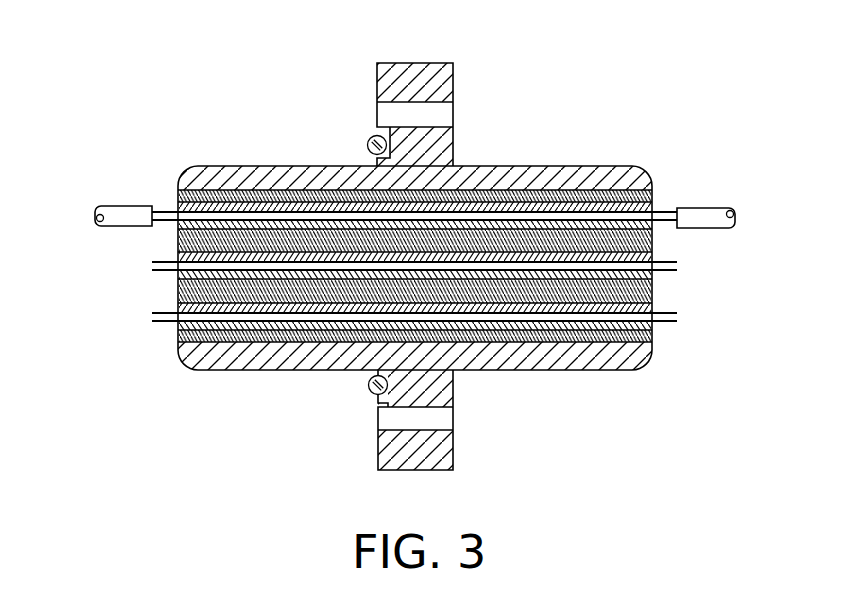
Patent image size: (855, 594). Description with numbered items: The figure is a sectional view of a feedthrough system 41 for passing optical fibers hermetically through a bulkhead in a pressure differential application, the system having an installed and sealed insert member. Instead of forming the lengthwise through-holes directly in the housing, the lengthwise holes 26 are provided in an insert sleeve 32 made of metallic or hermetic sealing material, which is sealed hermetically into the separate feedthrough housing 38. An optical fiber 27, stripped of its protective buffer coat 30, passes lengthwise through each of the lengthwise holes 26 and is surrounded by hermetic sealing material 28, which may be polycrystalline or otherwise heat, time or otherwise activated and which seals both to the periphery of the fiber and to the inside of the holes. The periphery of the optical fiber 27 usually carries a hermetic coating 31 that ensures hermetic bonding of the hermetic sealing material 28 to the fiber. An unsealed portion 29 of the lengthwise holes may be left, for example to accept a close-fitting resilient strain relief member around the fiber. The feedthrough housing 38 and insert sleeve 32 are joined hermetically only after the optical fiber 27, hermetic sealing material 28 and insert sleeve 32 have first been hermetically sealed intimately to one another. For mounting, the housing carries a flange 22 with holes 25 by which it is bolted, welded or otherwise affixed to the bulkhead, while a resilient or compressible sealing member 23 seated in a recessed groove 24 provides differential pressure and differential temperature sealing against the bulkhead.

The flange 22 is at (453, 461).
The sealing member 23 is at (368, 388).
The recessed groove 24 is at (370, 139).
The holes 25 is at (453, 93).
The lengthwise holes 26 is at (613, 172).
The optical fiber 27 is at (663, 212).
The hermetic sealing material 28 is at (488, 330).
The unsealed portion 29 is at (178, 198).
The protective buffer coat 30 is at (697, 227).
The hermetic coating 31 is at (163, 220).
The insert sleeve 32 is at (548, 335).
The feedthrough housing 38 is at (632, 350).
The feedthrough system 41 is at (533, 165).